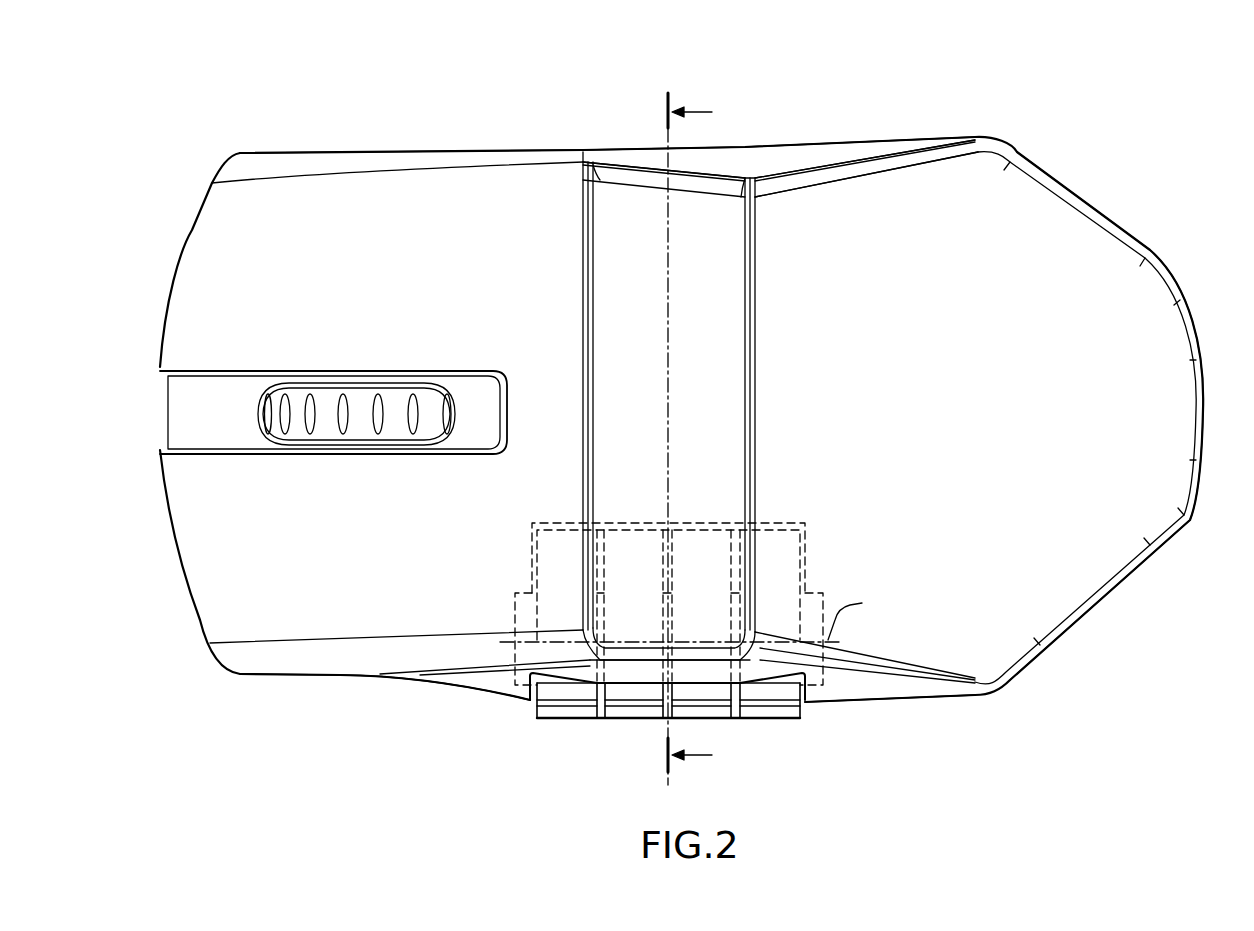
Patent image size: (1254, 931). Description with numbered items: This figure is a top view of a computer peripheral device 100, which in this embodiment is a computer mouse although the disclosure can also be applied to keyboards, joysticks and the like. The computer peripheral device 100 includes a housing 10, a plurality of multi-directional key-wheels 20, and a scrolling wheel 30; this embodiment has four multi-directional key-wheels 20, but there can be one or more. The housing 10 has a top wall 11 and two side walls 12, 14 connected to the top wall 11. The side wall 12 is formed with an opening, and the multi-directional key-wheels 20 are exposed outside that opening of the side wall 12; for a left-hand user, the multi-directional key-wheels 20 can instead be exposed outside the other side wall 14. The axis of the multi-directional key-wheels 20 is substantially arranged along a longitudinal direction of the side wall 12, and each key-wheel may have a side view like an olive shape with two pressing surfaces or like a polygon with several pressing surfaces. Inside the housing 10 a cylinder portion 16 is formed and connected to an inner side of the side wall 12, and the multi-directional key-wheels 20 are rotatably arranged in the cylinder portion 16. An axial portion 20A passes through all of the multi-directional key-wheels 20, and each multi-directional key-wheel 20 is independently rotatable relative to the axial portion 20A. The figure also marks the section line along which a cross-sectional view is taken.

The computer peripheral device 100 is at (314, 79).
The housing 10 is at (910, 78).
The top wall 11 is at (893, 198).
The side wall 12 is at (850, 693).
The side wall 14 is at (730, 160).
The cylinder portion 16 is at (777, 522).
The multi-directional key-wheels 20 is at (633, 720).
The axial portion 20A is at (828, 593).
The scrolling wheel 30 is at (353, 384).